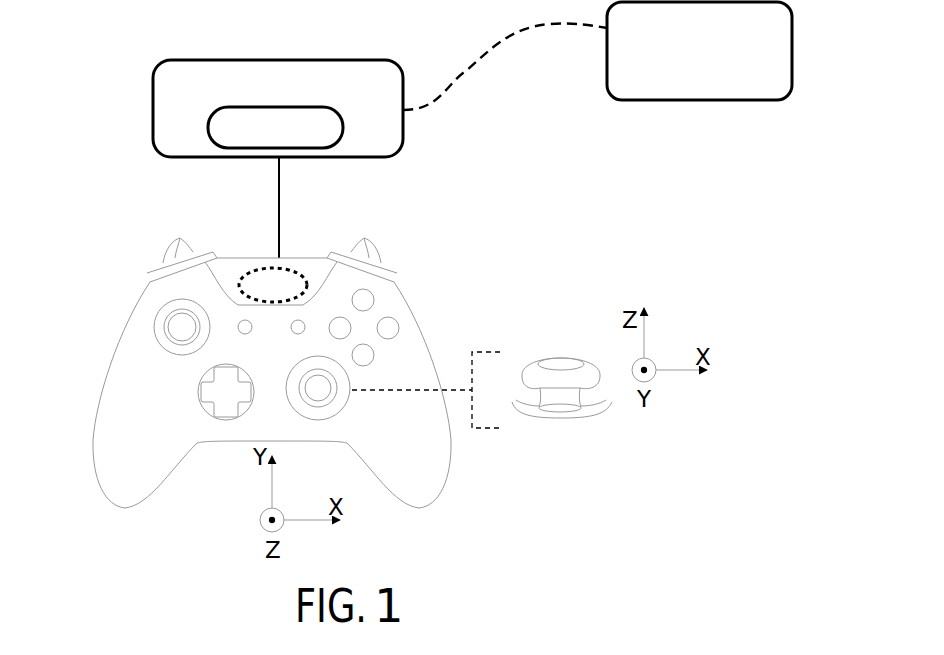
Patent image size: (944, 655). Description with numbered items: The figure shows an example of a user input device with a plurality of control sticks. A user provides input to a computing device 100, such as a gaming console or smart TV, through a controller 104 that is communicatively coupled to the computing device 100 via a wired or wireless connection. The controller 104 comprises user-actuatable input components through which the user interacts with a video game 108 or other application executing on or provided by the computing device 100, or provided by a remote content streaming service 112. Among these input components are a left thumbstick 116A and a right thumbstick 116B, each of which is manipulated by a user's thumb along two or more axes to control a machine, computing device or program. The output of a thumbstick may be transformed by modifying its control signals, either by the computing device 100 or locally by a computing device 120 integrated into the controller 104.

The computing device 100 is at (389, 91).
The controller 104 is at (100, 296).
The video game 108 is at (322, 138).
The remote content streaming service 112 is at (758, 90).
The left thumbstick 116A is at (140, 342).
The right thumbstick 116B is at (346, 414).
The computing device 120 is at (258, 296).